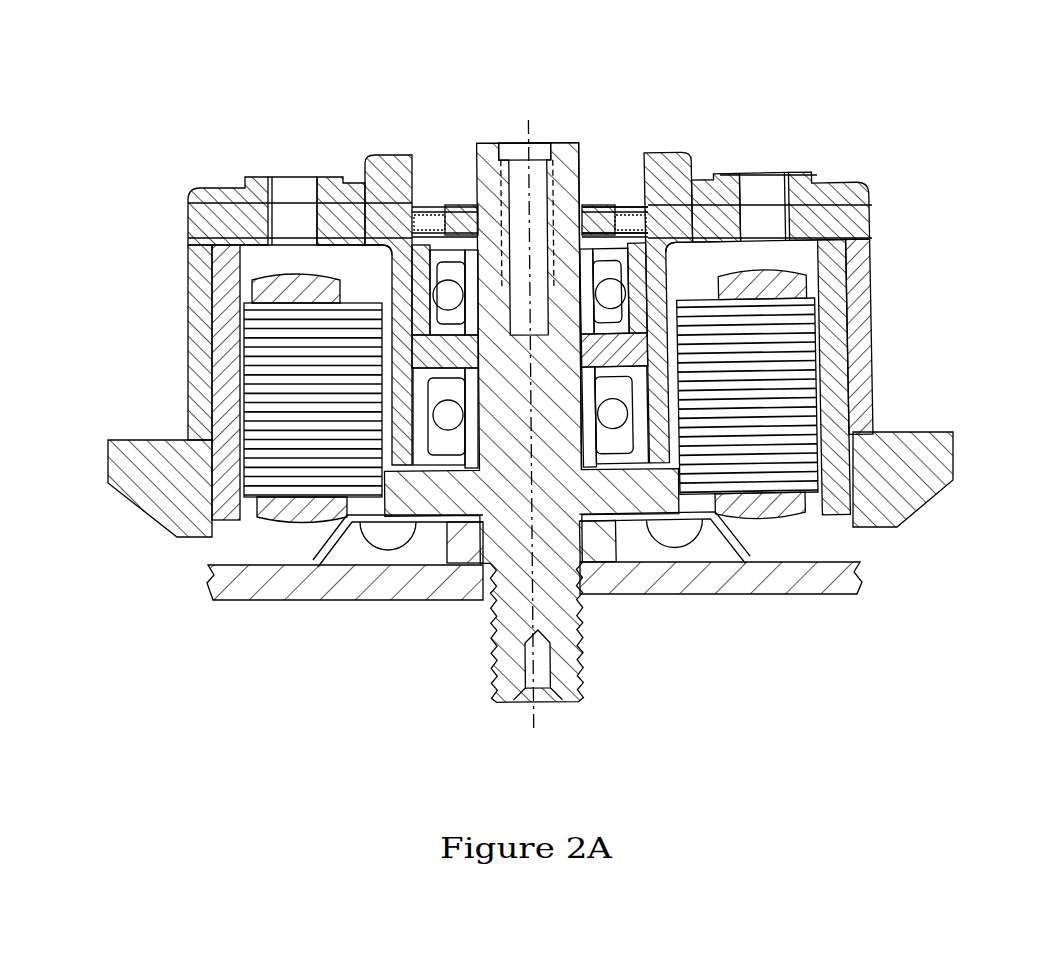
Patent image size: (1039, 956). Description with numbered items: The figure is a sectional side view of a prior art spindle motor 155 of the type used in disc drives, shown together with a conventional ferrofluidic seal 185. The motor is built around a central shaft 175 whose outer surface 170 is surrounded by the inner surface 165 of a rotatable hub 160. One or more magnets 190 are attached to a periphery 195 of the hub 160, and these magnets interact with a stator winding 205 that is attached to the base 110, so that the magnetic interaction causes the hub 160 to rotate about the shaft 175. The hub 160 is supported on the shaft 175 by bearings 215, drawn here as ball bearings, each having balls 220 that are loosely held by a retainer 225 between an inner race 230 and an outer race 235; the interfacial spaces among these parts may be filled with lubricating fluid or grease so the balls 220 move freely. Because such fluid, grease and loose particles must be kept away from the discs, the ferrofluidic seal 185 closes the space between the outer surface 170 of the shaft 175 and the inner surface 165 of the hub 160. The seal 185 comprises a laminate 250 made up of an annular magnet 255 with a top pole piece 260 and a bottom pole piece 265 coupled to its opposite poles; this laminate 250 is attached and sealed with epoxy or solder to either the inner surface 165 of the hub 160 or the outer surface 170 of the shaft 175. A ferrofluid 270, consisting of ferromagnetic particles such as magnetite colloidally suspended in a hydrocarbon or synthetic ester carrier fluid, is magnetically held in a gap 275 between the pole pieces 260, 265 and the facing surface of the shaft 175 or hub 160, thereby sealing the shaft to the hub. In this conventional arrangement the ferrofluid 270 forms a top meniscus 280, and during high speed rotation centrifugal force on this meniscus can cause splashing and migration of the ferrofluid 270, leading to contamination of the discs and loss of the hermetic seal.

The base 110 is at (648, 600).
The spindle motor 155 is at (132, 112).
The rotatable hub 160 is at (693, 150).
The inner surface 165 is at (635, 130).
The outer surface 170 is at (595, 125).
The shaft 175 is at (555, 145).
The ferrofluidic seal 185 is at (433, 135).
The magnets 190 is at (807, 312).
The periphery 195 is at (862, 385).
The stator winding 205 is at (850, 300).
The bearings 215 is at (425, 345).
The balls 220 is at (480, 420).
The retainer 225 is at (593, 447).
The inner race 230 is at (577, 330).
The outer race 235 is at (653, 410).
The laminate 250 is at (160, 202).
The annular magnet 255 is at (735, 172).
The top pole piece 260 is at (647, 207).
The bottom pole piece 265 is at (647, 232).
The ferrofluid 270 is at (577, 240).
The gap 275 is at (588, 198).
The top meniscus 280 is at (467, 150).